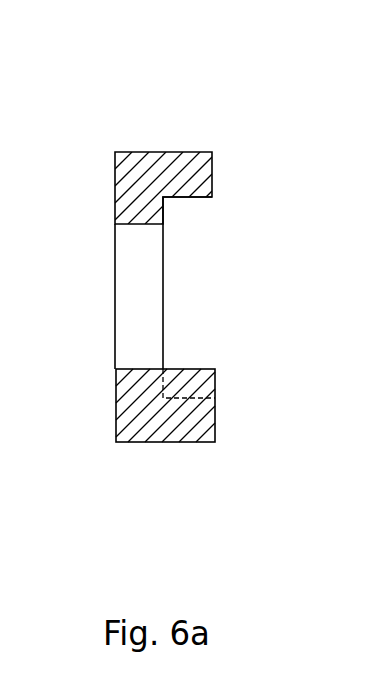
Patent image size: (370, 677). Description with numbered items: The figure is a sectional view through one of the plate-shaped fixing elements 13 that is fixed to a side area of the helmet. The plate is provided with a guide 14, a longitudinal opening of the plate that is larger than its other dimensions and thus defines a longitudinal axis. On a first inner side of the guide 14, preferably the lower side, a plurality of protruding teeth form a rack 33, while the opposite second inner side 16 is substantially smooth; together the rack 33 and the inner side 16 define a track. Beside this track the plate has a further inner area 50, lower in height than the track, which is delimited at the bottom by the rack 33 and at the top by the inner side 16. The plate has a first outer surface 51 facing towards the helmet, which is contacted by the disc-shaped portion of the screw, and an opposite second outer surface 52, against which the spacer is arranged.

The fixing element 13 is at (160, 138).
The guide 14 is at (166, 359).
The second inner side 16 is at (190, 198).
The rack 33 is at (186, 383).
The inner area 50 is at (138, 270).
The first outer surface 51 is at (207, 166).
The second outer surface 52 is at (114, 163).